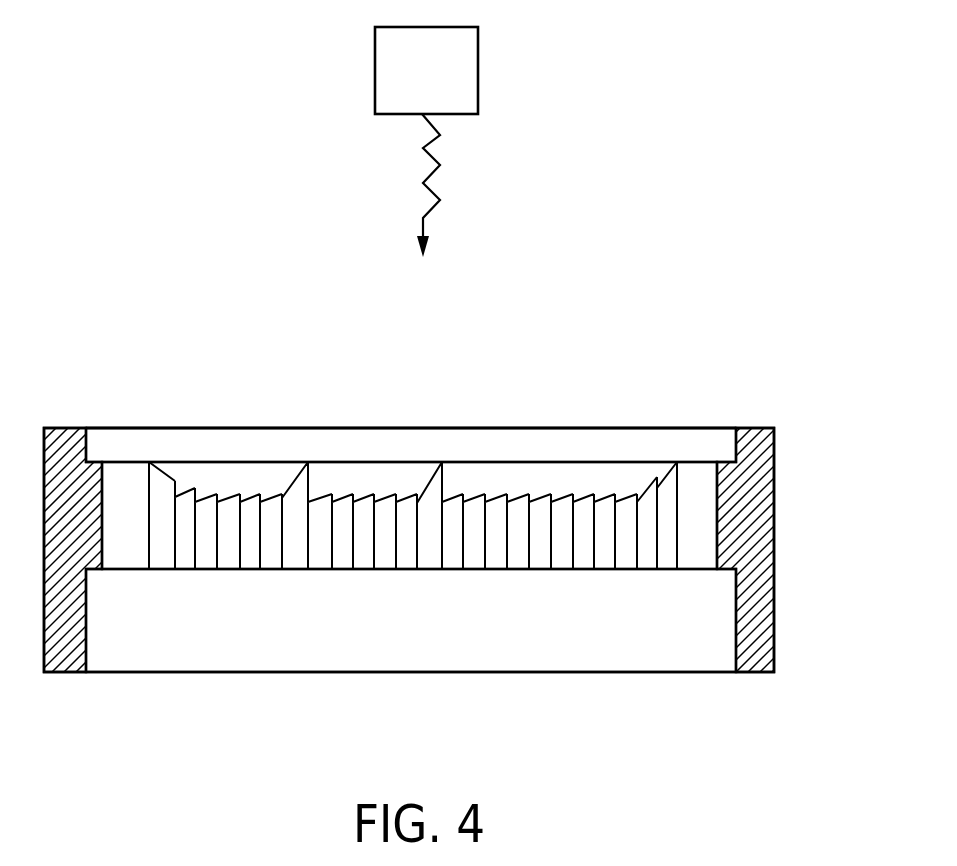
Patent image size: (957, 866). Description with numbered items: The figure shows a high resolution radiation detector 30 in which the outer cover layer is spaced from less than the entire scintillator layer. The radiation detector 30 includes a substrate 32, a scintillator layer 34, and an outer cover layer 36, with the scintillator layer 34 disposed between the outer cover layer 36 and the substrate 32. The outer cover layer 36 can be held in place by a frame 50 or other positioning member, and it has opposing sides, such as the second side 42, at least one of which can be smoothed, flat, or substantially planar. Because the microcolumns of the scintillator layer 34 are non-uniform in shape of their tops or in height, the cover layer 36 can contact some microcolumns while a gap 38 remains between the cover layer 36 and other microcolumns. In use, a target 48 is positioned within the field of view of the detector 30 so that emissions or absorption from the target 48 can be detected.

The radiation detector 30 is at (806, 275).
The substrate 32 is at (657, 660).
The scintillator layer 34 is at (212, 495).
The outer cover layer 36 is at (408, 428).
The gap 38 is at (545, 478).
The second side 42 is at (115, 428).
The target 48 is at (478, 73).
The frame 50 is at (775, 513).